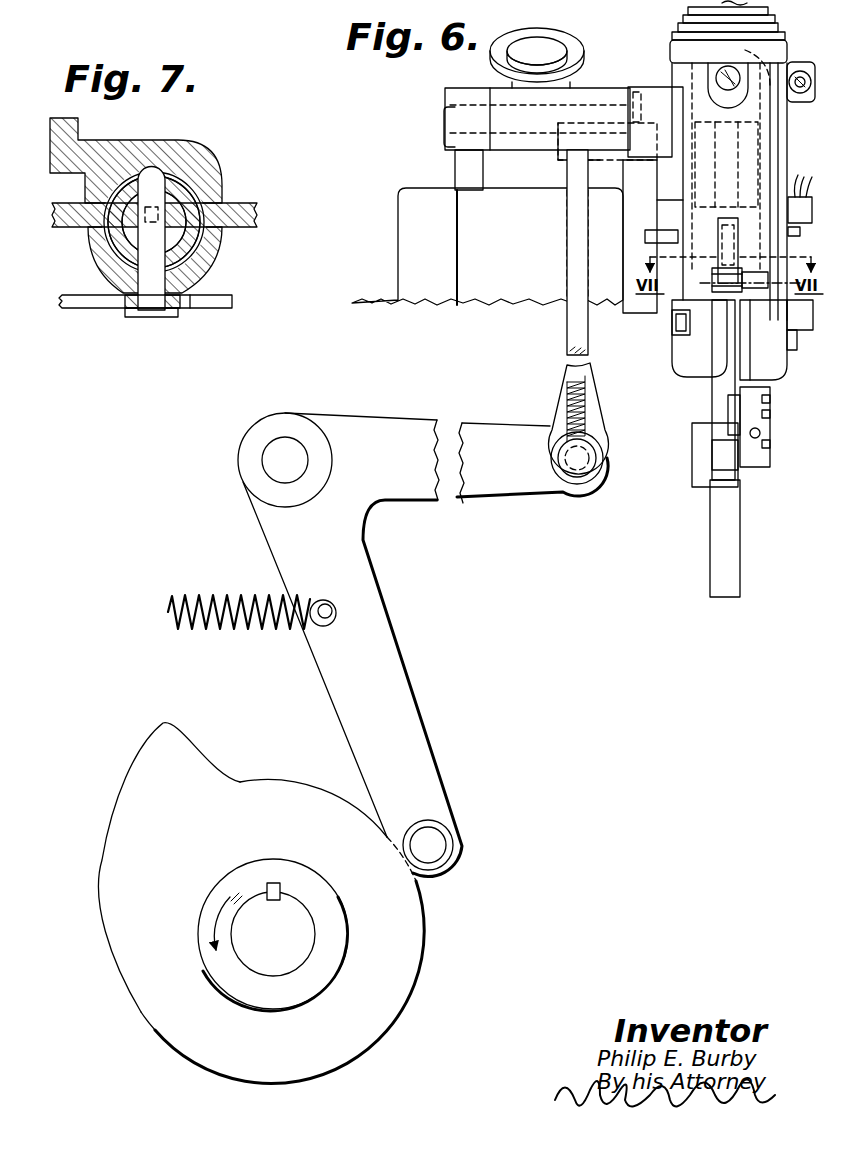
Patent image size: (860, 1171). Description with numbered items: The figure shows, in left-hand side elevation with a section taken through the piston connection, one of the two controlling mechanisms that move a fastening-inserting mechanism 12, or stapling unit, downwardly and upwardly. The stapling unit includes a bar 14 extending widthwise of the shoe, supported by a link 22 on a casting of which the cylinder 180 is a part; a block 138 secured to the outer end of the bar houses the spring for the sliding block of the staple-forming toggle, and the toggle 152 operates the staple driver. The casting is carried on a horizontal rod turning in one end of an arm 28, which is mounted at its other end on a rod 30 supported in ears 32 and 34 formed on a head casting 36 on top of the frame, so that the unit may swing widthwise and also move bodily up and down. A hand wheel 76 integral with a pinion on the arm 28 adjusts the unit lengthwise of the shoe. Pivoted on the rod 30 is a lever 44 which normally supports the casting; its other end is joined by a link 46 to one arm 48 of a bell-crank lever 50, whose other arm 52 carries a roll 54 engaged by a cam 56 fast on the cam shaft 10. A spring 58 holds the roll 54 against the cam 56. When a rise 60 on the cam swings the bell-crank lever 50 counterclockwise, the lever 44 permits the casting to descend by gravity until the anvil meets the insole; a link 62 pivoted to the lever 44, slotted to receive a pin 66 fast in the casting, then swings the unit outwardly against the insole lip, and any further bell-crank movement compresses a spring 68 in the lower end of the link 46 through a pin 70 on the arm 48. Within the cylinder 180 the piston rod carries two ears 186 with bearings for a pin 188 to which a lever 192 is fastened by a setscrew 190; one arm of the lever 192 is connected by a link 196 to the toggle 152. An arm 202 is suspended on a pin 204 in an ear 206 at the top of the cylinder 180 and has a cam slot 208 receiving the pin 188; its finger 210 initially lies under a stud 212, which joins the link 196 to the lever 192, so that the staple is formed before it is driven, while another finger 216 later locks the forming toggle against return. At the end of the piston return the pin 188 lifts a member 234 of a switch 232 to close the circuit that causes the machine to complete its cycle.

In FIG. 6, the cam shaft 10 is at (305, 940).
In FIG. 6, the fastening-inserting mechanism 12 is at (726, 600).
In FIG. 6, the bar 14 is at (750, 440).
In FIG. 6, the link 22 is at (712, 355).
In FIG. 6, the arm 28 is at (522, 142).
In FIG. 6, the rod 30 is at (466, 100).
In FIG. 6, the ear 32 is at (456, 172).
In FIG. 6, the ear 34 is at (614, 179).
In FIG. 6, the head casting 36 is at (412, 249).
In FIG. 6, the lever 44 is at (645, 92).
In FIG. 6, the link 46 is at (566, 330).
In FIG. 6, the arm 48 is at (523, 480).
In FIG. 6, the bell-crank lever 50 is at (250, 507).
In FIG. 6, the arm 52 is at (418, 716).
In FIG. 6, the roll 54 is at (455, 847).
In FIG. 6, the cam 56 is at (420, 942).
In FIG. 6, the spring 58 is at (205, 600).
In FIG. 6, the rise 60 is at (115, 786).
In FIG. 6, the link 62 is at (670, 202).
In FIG. 6, the pin 66 is at (648, 238).
In FIG. 6, the spring 68 is at (556, 428).
In FIG. 6, the pin 70 is at (584, 460).
In FIG. 6, the hand wheel 76 is at (570, 44).
In FIG. 6, the block 138 is at (712, 458).
In FIG. 6, the toggle 152 is at (768, 436).
In FIG. 7, the cylinder 180 is at (196, 205).
In FIG. 6, the cylinder 180 is at (765, 130).
In FIG. 7, the ear 186 is at (165, 192).
In FIG. 7, the pin 188 is at (160, 287).
In FIG. 6, the pin 188 is at (767, 232).
In FIG. 7, the setscrew 190 is at (176, 160).
In FIG. 7, the lever 192 is at (242, 215).
In FIG. 6, the lever 192 is at (720, 248).
In FIG. 6, the link 196 is at (760, 375).
In FIG. 7, the arm 202 is at (172, 312).
In FIG. 6, the arm 202 is at (780, 142).
In FIG. 6, the pin 204 is at (728, 54).
In FIG. 6, the ear 206 is at (802, 62).
In FIG. 7, the cam slot 208 is at (157, 319).
In FIG. 7, the finger 210 is at (85, 306).
In FIG. 6, the finger 210 is at (806, 325).
In FIG. 6, the stud 212 is at (768, 286).
In FIG. 7, the finger 216 is at (209, 310).
In FIG. 6, the switch 232 is at (810, 196).
In FIG. 6, the member 234 is at (811, 234).